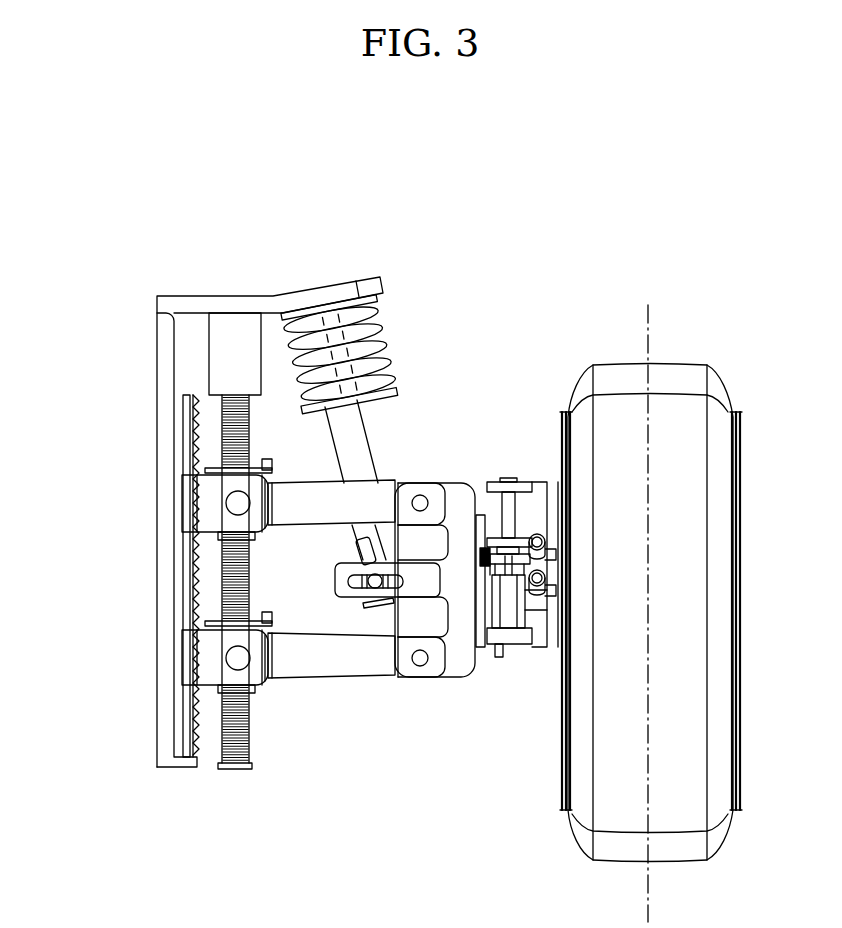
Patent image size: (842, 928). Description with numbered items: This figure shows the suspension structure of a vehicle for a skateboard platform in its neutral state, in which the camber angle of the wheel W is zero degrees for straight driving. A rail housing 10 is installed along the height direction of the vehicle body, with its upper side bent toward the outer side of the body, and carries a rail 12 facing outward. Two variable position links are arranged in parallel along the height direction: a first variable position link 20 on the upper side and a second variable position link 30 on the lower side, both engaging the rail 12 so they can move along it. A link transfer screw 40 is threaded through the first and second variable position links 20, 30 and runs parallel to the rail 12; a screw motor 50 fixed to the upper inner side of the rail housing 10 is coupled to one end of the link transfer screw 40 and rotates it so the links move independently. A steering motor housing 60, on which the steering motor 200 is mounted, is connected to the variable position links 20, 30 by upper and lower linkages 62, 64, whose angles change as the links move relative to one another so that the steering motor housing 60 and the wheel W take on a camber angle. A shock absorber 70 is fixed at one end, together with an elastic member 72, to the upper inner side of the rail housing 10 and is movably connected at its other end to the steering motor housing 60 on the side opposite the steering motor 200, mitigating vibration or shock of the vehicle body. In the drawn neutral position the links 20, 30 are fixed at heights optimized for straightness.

The rail housing 10 is at (230, 522).
The rail 12 is at (142, 576).
The first variable position link 20 is at (175, 503).
The second variable position link 30 is at (176, 657).
The link transfer screw 40 is at (183, 582).
The screw motor 50 is at (171, 354).
The steering motor housing 60 is at (405, 615).
The linkage 62 is at (356, 475).
The linkage 64 is at (331, 692).
The shock absorber 70 is at (395, 487).
The elastic member 72 is at (369, 354).
The steering motor 200 is at (517, 600).
The wheel W is at (651, 596).